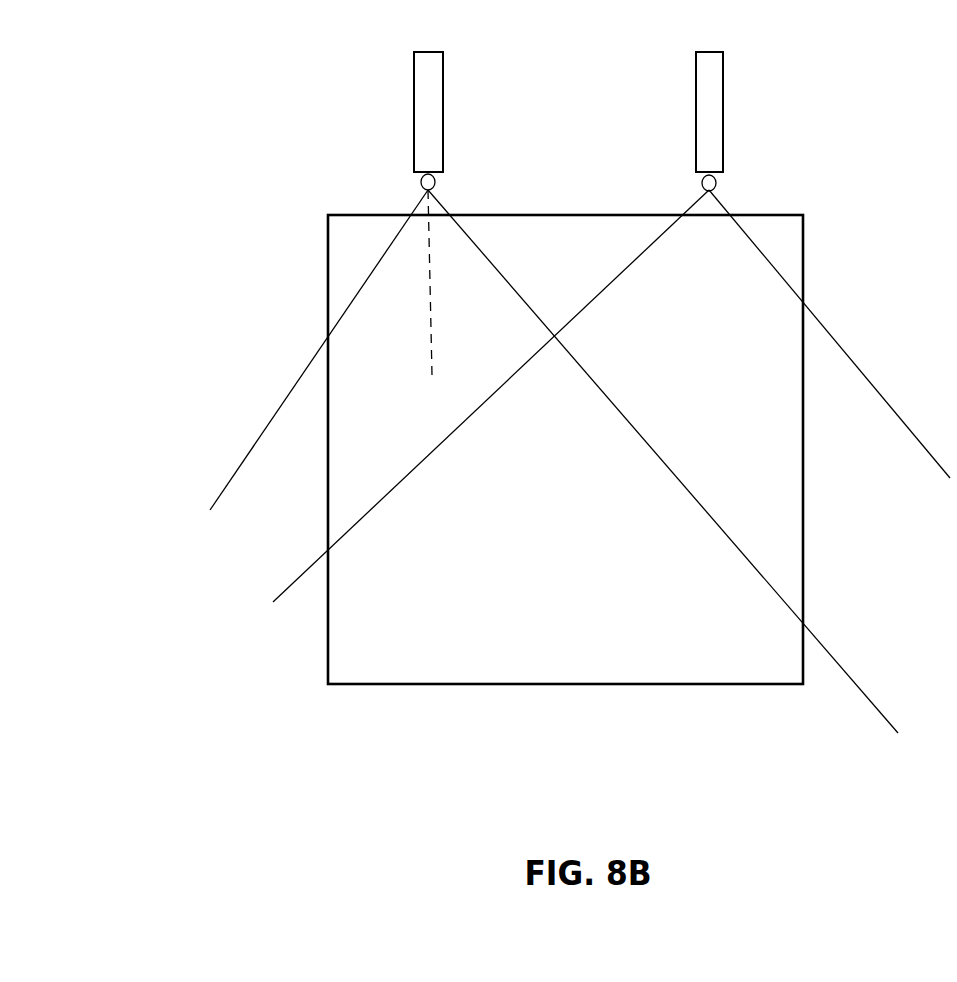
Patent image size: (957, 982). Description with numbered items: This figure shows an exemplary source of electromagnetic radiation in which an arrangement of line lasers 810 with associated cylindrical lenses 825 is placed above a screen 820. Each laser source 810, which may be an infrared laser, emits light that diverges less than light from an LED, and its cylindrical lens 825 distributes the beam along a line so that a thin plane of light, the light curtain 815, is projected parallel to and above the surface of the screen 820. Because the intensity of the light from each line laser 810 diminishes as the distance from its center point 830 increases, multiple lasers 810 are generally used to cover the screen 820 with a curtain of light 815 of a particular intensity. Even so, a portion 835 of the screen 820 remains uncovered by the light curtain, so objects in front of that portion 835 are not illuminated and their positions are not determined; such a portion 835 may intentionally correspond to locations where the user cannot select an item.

The laser source 810 is at (420, 78).
The light curtain 815 is at (278, 405).
The screen 820 is at (565, 449).
The cylindrical lens 825 is at (435, 184).
The center point 830 is at (442, 282).
The portion 835 is at (770, 243).